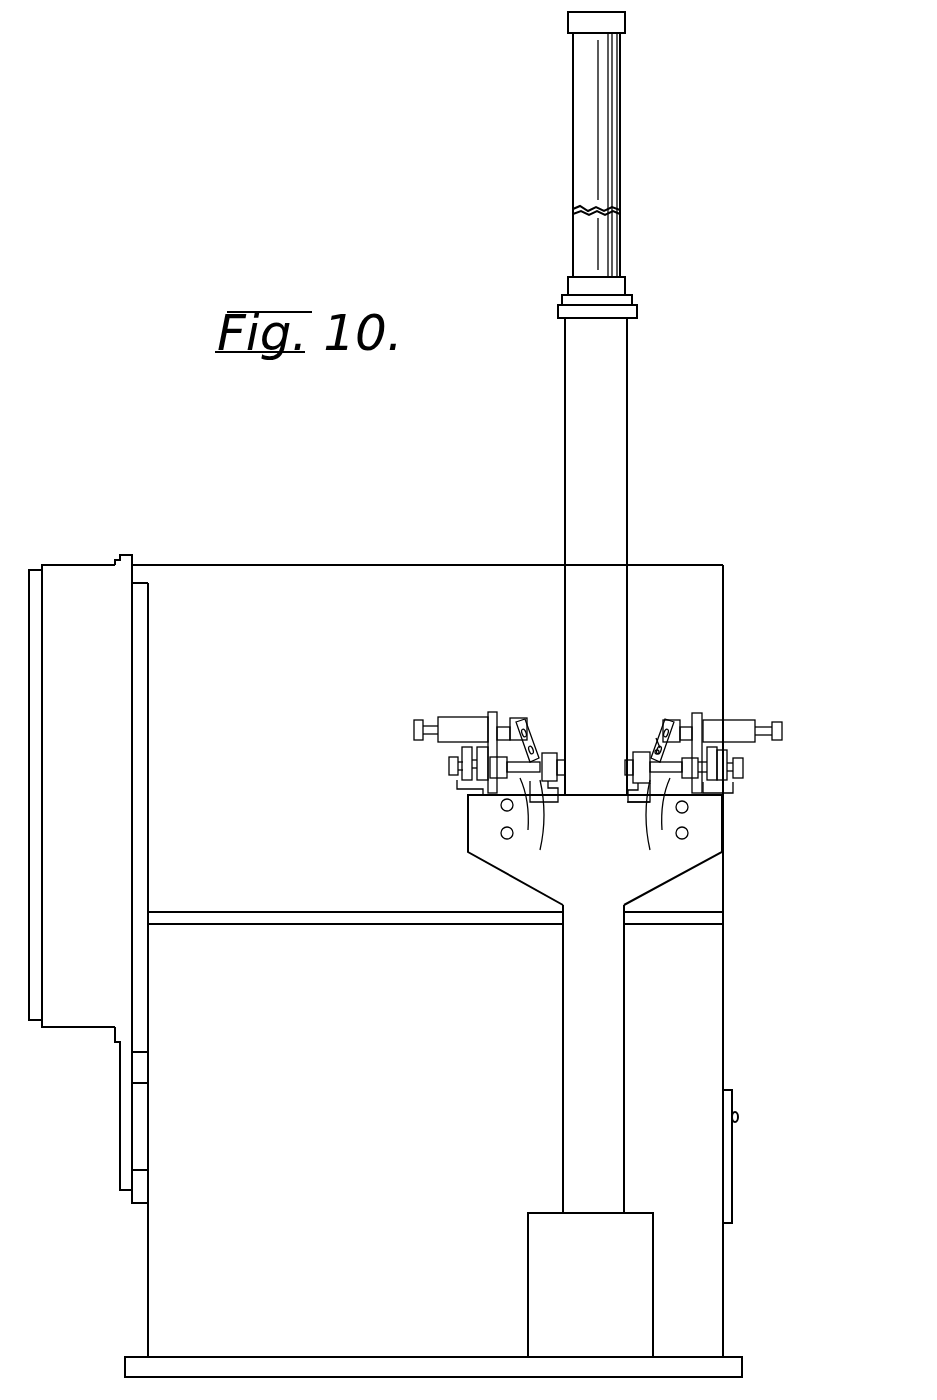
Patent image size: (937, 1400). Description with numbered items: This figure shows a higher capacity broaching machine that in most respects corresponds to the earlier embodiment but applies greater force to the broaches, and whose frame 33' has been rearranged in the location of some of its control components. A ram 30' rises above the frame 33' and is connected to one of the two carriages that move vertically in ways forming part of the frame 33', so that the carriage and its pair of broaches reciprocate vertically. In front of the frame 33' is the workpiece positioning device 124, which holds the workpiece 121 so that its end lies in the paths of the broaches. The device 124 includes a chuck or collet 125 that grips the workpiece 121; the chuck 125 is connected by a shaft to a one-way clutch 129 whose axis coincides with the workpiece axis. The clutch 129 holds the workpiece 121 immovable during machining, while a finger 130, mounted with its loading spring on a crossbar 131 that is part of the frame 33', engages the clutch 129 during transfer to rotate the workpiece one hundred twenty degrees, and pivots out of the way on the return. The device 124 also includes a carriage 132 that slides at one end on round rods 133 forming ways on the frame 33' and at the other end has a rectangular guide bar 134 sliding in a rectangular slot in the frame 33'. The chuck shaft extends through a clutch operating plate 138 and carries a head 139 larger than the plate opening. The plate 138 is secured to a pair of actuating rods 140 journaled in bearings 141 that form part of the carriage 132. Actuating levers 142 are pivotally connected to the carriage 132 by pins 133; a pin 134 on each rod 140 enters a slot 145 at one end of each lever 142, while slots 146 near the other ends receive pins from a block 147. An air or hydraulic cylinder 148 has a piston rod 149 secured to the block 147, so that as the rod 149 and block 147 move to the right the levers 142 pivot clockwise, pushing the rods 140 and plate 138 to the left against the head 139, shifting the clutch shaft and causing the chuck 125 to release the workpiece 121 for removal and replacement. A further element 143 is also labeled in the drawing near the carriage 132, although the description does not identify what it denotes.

The ram 30' is at (638, 165).
The frame 33' is at (418, 847).
The workpiece positioning device 124 is at (493, 700).
The workpiece 121 is at (634, 770).
The chuck or collet 125 is at (640, 792).
The one-way clutch 129 is at (465, 773).
The finger 130 is at (470, 790).
The crossbar 131 is at (494, 790).
The carriage 132 is at (501, 808).
The round rods 133 is at (501, 836).
The rectangular guide bar 134 is at (648, 792).
The clutch operating plate 138 is at (473, 745).
The head 139 is at (449, 765).
The actuating rods 140 is at (522, 790).
The bearings 141 is at (518, 802).
The actuating levers 142 is at (656, 750).
The base plate 143 is at (632, 803).
The slots 145 is at (636, 766).
The slots 146 is at (657, 740).
The block 147 is at (520, 720).
The air or hydraulic cylinder 148 is at (452, 717).
The piston rod 149 is at (512, 724).